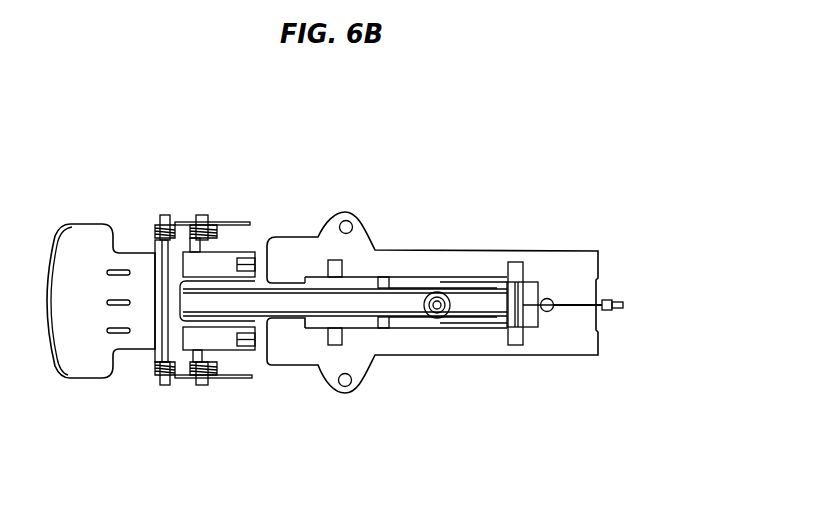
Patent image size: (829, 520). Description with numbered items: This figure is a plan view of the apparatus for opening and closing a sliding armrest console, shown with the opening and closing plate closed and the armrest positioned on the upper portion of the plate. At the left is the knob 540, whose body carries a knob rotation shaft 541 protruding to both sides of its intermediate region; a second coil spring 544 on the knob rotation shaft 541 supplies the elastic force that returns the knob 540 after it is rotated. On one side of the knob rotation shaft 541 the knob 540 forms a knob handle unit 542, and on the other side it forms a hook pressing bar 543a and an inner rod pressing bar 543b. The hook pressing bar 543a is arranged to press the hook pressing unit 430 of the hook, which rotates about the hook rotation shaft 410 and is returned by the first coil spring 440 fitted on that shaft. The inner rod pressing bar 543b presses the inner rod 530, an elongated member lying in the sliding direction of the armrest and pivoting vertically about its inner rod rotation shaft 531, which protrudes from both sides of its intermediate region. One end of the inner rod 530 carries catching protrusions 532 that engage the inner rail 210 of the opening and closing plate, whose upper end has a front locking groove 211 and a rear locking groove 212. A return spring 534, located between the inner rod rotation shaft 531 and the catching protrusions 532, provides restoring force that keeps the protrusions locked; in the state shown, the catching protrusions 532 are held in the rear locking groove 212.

The inner rail 210 is at (422, 260).
The front locking groove 211 is at (338, 333).
The rear locking groove 212 is at (538, 270).
The hook rotation shaft 410 is at (200, 385).
The hook pressing unit 430 is at (240, 350).
The first coil spring 440 is at (222, 380).
The inner rod 530 is at (520, 428).
The inner rod rotation shaft 531 is at (253, 320).
The catching protrusions 532 is at (538, 270).
The return spring 534 is at (440, 320).
The knob 540 is at (338, 140).
The knob rotation shaft 541 is at (176, 246).
The knob handle unit 542 is at (87, 243).
The hook pressing bar 543a is at (227, 333).
The inner rod pressing bar 543b is at (187, 298).
The second coil spring 544 is at (158, 223).